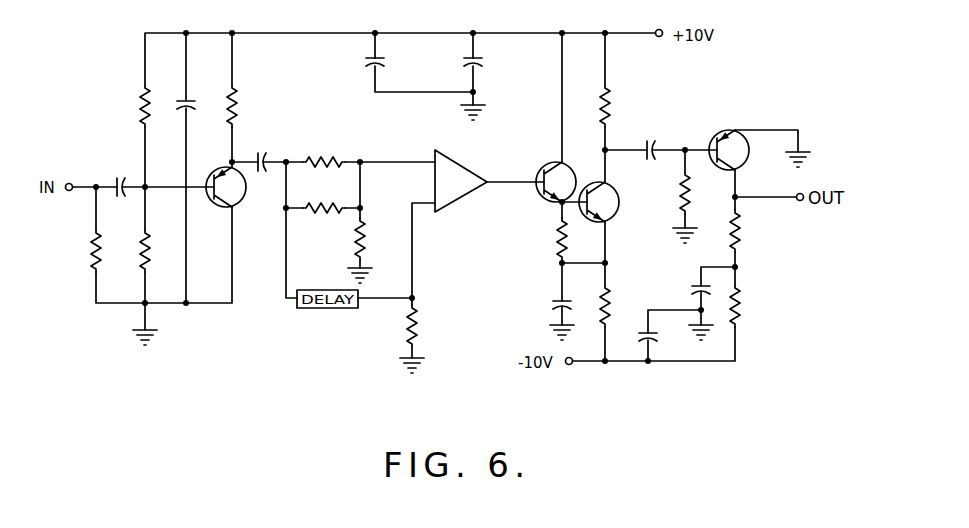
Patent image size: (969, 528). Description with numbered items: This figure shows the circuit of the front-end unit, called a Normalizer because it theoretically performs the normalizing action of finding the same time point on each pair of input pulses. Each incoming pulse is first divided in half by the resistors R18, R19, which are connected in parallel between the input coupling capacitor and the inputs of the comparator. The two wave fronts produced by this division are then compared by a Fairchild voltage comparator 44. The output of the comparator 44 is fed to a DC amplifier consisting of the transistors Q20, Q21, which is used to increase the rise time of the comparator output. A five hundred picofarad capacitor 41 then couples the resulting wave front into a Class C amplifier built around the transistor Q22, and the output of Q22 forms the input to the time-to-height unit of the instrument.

The resistor R18 is at (324, 153).
The resistor R19 is at (324, 198).
The voltage comparator 44 is at (468, 190).
The capacitor 41 is at (649, 141).
The transistor Q20 is at (547, 171).
The transistor Q21 is at (618, 202).
The Class C amplifier Q22 is at (728, 139).